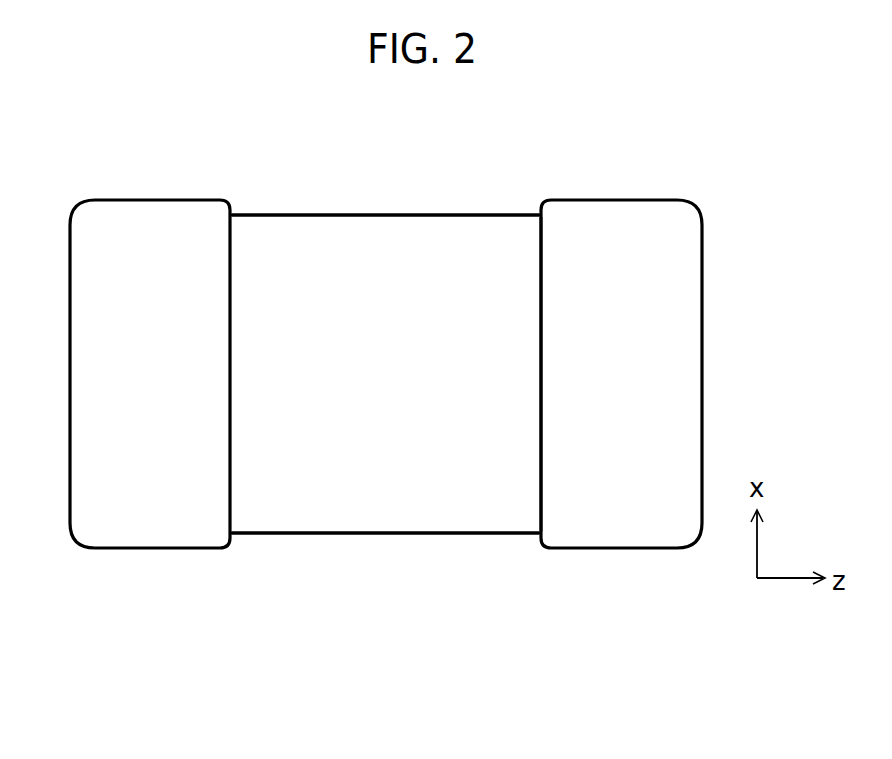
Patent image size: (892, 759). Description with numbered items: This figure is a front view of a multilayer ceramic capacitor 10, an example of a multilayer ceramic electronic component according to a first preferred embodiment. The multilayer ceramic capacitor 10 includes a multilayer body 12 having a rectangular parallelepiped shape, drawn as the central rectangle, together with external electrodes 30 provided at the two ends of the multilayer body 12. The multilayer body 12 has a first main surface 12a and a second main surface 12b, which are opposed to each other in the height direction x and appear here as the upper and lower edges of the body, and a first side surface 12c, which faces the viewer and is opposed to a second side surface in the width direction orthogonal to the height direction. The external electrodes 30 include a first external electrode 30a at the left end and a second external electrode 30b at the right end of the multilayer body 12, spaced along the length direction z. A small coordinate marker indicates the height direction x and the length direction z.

The multilayer ceramic capacitor 10 is at (62, 136).
The multilayer body 12 is at (417, 213).
The first main surface 12a is at (358, 214).
The second main surface 12b is at (385, 534).
The first side surface 12c is at (471, 255).
The external electrodes 30 is at (386, 427).
The first external electrode 30a is at (150, 198).
The second external electrode 30b is at (611, 198).